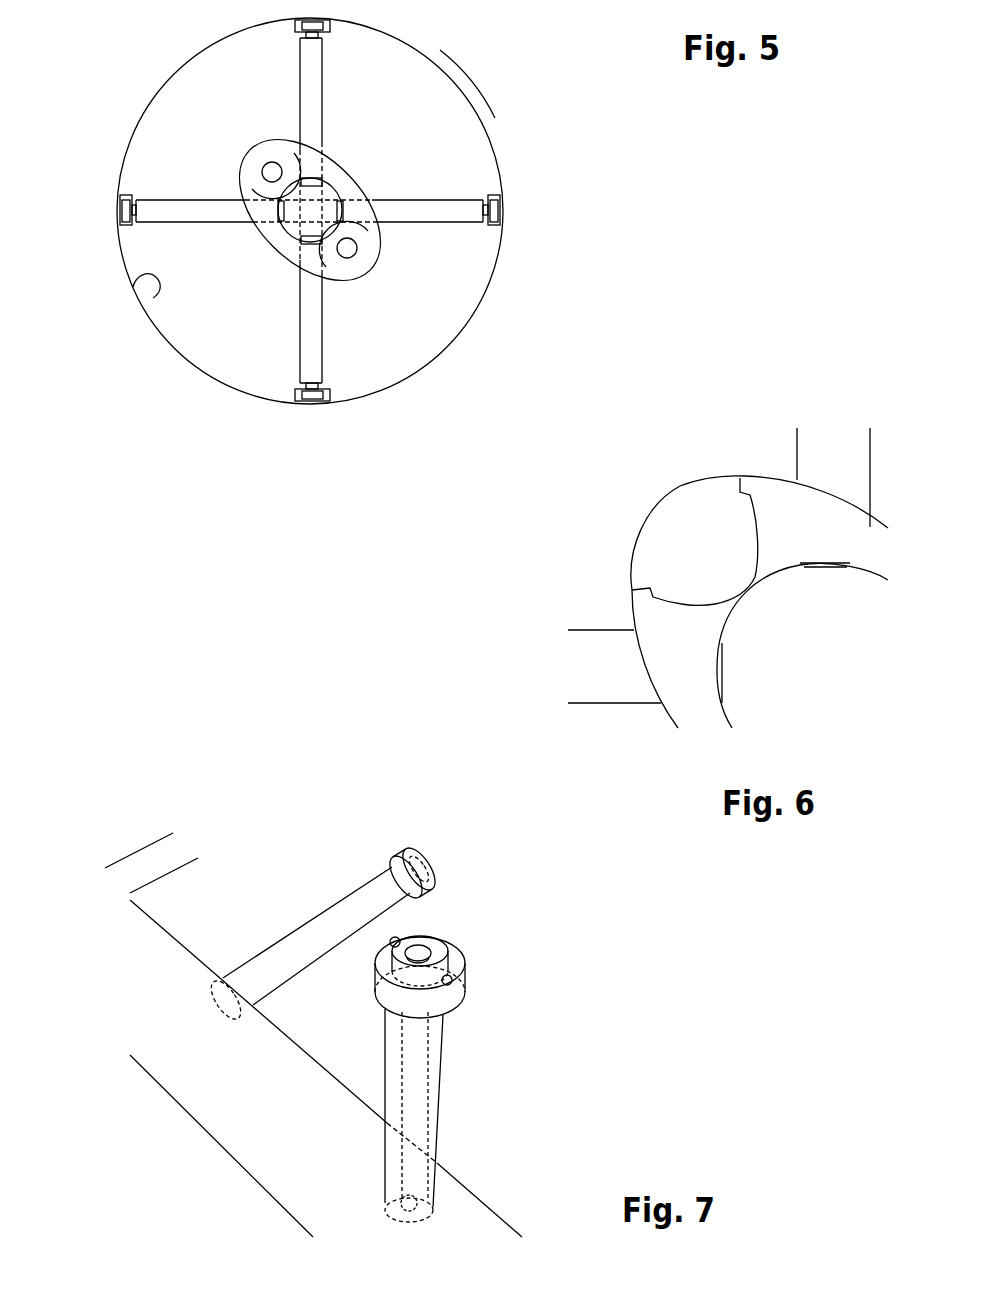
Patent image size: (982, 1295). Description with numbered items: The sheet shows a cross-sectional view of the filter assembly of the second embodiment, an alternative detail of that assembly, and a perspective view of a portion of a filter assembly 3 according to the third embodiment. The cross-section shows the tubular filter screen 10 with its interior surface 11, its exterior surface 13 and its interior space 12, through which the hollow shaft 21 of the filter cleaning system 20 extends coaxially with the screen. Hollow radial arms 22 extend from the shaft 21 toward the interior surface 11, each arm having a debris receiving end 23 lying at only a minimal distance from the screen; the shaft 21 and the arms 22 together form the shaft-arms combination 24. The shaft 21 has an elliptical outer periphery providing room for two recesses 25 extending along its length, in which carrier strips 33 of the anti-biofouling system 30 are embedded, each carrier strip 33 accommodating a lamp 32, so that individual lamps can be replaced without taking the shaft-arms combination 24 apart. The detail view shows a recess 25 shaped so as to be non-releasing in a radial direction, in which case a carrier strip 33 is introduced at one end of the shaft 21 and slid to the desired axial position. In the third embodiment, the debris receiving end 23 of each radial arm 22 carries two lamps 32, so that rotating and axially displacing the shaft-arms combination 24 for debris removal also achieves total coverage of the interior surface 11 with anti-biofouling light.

In FIG. 7, the filter assembly 3 is at (142, 811).
In FIG. 5, the tubular filter screen 10 is at (492, 130).
In FIG. 5, the interior surface 11 is at (153, 298).
In FIG. 5, the interior space 12 is at (236, 296).
In FIG. 5, the exterior surface 13 is at (467, 92).
In FIG. 7, the filter cleaning system 20 is at (506, 1063).
In FIG. 5, the hollow shaft 21 is at (341, 183).
In FIG. 6, the hollow shaft 21 is at (847, 533).
In FIG. 7, the hollow shaft 21 is at (468, 1212).
In FIG. 5, the radial arms 22 is at (173, 205).
In FIG. 6, the radial arms 22 is at (830, 457).
In FIG. 7, the radial arms 22 is at (303, 942).
In FIG. 5, the debris receiving end 23 is at (122, 210).
In FIG. 7, the debris receiving end 23 is at (427, 865).
In FIG. 5, the shaft-arms combination 24 is at (312, 298).
In FIG. 7, the shaft-arms combination 24 is at (175, 972).
In FIG. 5, the recesses 25 is at (240, 151).
In FIG. 6, the recesses 25 is at (692, 515).
In FIG. 7, the anti-biofouling system 30 is at (496, 971).
In FIG. 5, the lamps 32 is at (352, 252).
In FIG. 7, the lamps 32 is at (452, 973).
In FIG. 5, the carrier strip 33 is at (363, 242).